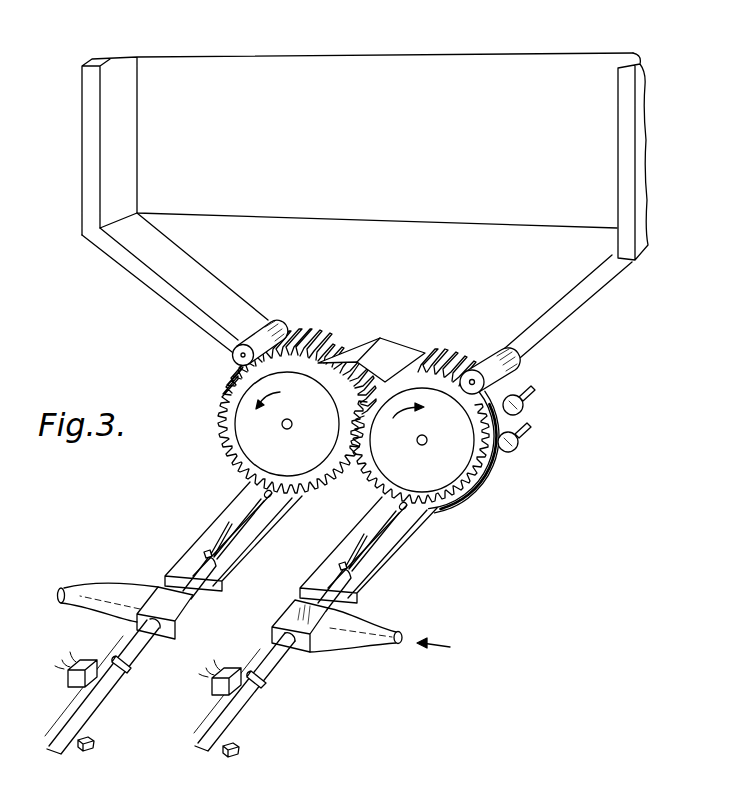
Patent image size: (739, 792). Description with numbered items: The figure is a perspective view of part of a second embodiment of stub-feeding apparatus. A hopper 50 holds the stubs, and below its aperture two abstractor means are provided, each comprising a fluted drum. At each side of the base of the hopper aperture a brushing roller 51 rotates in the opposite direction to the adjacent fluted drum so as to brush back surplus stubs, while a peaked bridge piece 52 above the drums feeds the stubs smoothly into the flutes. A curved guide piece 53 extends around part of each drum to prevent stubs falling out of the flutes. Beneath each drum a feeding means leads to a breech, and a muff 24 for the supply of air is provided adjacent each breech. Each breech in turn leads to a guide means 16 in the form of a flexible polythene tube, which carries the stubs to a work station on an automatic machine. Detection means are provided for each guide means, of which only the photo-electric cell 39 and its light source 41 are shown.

The hopper 50 is at (338, 82).
The brushing roller 51 is at (280, 332).
The peaked bridge piece 52 is at (392, 348).
The curved guide piece 53 is at (497, 468).
The muff 24 is at (190, 607).
The cell 39 is at (87, 660).
The guide means 16 is at (225, 705).
The light source 41 is at (212, 752).